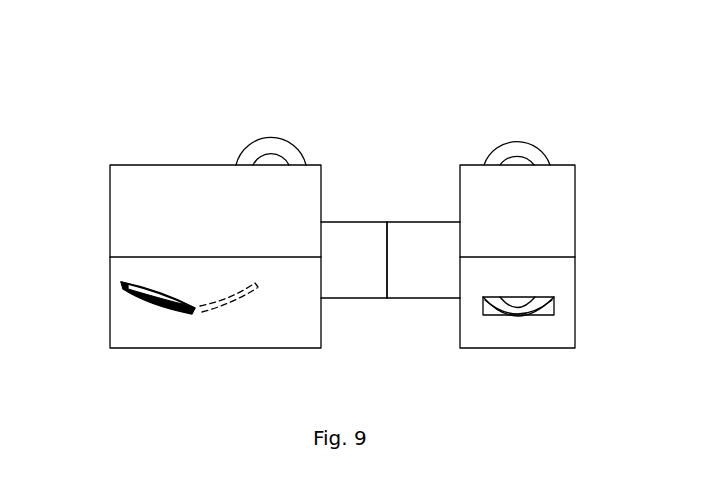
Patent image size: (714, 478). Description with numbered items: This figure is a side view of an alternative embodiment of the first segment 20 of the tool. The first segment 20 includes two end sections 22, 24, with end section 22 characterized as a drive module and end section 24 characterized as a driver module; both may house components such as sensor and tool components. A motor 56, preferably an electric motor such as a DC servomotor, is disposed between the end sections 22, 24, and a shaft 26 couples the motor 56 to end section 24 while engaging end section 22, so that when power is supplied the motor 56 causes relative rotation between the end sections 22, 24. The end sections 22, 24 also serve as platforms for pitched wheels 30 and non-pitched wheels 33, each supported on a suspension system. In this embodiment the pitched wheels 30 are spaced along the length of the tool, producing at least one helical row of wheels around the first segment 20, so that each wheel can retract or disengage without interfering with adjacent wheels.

The first segment 20 is at (353, 102).
The end section 22 is at (110, 210).
The end section 24 is at (575, 281).
The shaft 26 is at (346, 237).
The motor 56 is at (405, 237).
The pitched wheels 30 is at (257, 146).
The non-pitched wheels 33 is at (521, 142).